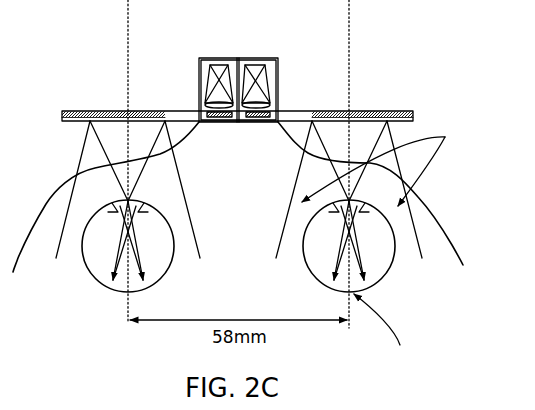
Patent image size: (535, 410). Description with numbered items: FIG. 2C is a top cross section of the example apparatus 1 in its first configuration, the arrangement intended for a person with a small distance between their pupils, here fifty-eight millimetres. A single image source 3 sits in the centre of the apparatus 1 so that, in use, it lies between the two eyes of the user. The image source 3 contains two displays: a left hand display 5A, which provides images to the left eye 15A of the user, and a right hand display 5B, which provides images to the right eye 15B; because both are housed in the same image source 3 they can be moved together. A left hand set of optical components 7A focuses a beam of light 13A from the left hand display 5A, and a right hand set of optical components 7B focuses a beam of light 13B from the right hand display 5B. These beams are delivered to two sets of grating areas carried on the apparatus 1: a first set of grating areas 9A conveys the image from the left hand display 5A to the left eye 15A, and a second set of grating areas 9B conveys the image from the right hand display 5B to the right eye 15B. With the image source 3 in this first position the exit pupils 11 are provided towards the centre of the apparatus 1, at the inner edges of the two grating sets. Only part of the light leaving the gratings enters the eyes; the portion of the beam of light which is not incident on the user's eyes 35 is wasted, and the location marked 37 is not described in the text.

The apparatus 1 is at (415, 113).
The image source 3 is at (280, 74).
The left hand display 5A is at (219, 62).
The right hand display 5B is at (262, 62).
The left hand set of optical components 7A is at (201, 105).
The right hand set of optical components 7B is at (279, 104).
The first set of grating areas 9A is at (80, 110).
The second set of grating areas 9B is at (338, 110).
The exit pupil 11 is at (122, 110).
The beam of light from the left hand display 13A is at (89, 150).
The beam of light from the right hand display 13B is at (306, 151).
The left eye 15A is at (90, 277).
The right eye 15B is at (380, 275).
The portion of the beam of light not incident on the user's eyes 35 is at (391, 166).
The eye rotation center 37 is at (386, 332).